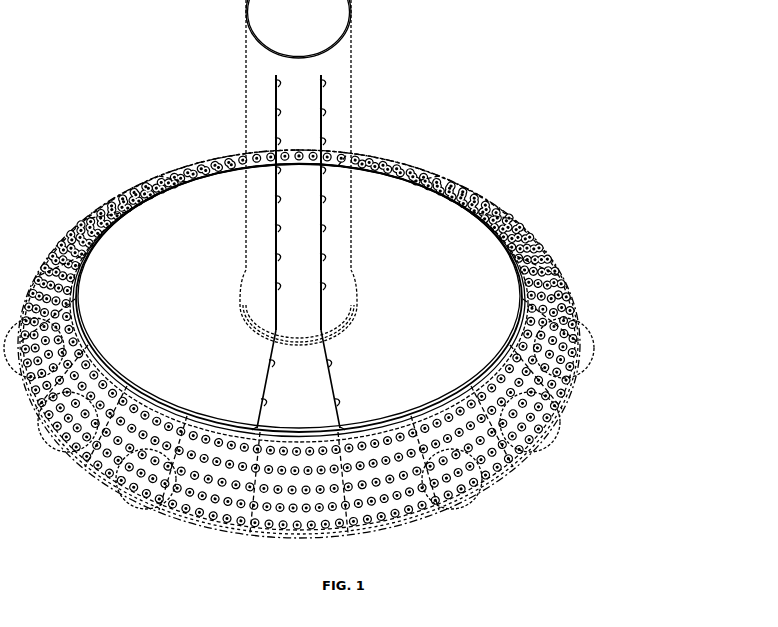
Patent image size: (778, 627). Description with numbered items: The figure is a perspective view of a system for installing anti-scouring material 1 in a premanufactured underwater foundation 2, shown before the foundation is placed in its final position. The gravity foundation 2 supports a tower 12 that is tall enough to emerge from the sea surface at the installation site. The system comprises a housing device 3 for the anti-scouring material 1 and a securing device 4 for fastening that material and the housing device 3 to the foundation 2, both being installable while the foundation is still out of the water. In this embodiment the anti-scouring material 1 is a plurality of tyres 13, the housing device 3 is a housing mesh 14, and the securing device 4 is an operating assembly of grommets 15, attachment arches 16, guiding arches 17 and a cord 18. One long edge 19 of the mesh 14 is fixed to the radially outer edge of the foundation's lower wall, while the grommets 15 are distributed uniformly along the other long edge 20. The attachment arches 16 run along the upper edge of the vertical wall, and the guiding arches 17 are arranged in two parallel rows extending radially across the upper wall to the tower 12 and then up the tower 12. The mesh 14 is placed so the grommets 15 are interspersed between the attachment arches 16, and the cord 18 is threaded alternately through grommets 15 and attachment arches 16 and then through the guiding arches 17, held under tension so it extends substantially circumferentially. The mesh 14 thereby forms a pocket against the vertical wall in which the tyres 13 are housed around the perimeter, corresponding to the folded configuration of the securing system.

The anti-scouring material 1 is at (563, 343).
The premanufactured underwater foundation 2 is at (186, 224).
The housing device 3 is at (576, 298).
The securing device 4 is at (372, 417).
The tower 12 is at (354, 53).
The tyres 13 is at (604, 348).
The housing mesh 14 is at (347, 342).
The grommets 15 is at (494, 371).
The attachment arches 16 is at (423, 402).
The guiding arches 17 is at (329, 141).
The cord 18 is at (324, 98).
The one long edge of the mesh 19 is at (527, 449).
The other long edge of the mesh 20 is at (80, 255).